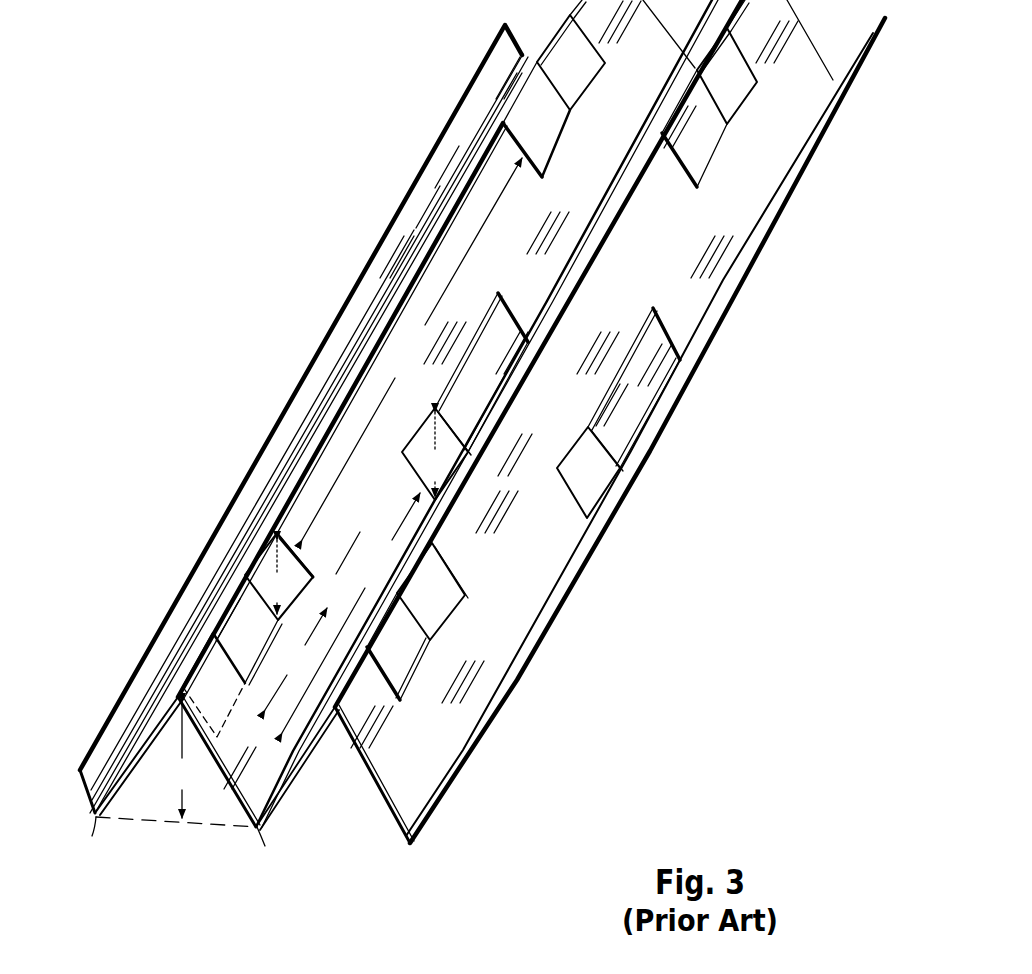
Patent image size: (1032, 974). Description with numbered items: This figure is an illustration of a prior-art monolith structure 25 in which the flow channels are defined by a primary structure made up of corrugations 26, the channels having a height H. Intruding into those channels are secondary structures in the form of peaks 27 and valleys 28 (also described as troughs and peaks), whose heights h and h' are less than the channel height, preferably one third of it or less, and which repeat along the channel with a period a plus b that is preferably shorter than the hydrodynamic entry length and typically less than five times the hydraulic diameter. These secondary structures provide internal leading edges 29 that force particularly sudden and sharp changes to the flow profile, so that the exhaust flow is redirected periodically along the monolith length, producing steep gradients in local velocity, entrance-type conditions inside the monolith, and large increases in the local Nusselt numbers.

The structure 25 is at (300, 283).
The corrugations 26 is at (184, 852).
The peaks (troughs) 27 is at (240, 617).
The valleys (peaks) 28 is at (662, 428).
The internal leading edges 29 is at (420, 426).